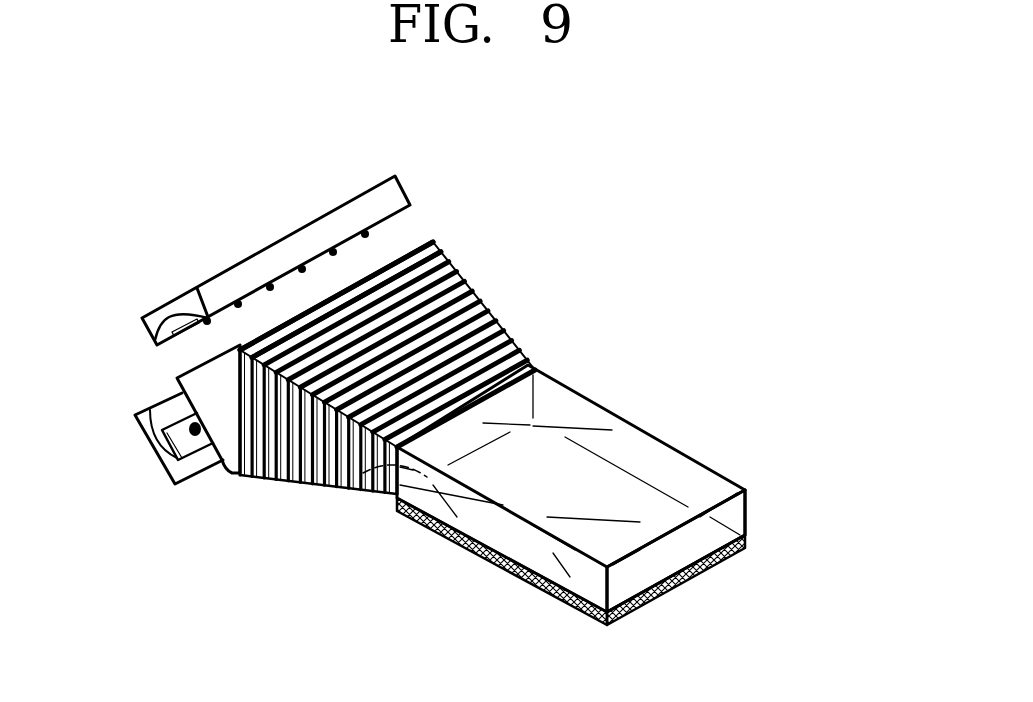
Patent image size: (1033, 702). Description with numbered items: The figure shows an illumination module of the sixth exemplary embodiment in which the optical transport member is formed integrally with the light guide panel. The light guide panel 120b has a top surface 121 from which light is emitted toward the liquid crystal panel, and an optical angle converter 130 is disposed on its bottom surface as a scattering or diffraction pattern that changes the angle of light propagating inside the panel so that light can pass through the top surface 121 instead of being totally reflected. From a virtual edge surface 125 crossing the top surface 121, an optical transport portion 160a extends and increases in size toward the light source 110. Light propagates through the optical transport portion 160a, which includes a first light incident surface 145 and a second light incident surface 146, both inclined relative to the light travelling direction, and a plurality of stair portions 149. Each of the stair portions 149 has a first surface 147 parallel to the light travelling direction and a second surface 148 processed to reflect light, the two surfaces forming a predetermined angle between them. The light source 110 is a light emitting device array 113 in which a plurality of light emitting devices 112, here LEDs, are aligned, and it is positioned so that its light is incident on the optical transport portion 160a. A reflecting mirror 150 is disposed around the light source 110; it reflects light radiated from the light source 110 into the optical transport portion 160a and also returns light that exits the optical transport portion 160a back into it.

The light source 110 is at (157, 463).
The light emitting devices 112 is at (185, 455).
The light emitting device array 113 is at (196, 435).
The light guide panel 120b is at (750, 532).
The top surface 121 is at (713, 480).
The virtual edge surface 125 is at (363, 474).
The optical angle converter 130 is at (567, 603).
The first light incident surface 145 is at (193, 371).
The second light incident surface 146 is at (172, 390).
The first surface 147 is at (433, 242).
The second surface 148 is at (443, 251).
The stair portions 149 is at (537, 201).
The reflecting mirror 150 is at (160, 462).
The optical transport portion 160a is at (303, 486).